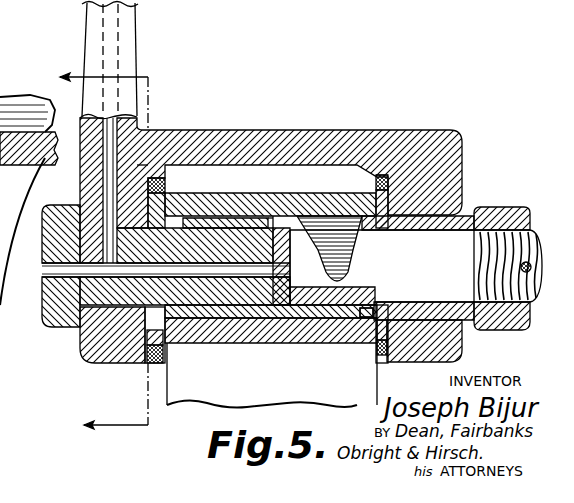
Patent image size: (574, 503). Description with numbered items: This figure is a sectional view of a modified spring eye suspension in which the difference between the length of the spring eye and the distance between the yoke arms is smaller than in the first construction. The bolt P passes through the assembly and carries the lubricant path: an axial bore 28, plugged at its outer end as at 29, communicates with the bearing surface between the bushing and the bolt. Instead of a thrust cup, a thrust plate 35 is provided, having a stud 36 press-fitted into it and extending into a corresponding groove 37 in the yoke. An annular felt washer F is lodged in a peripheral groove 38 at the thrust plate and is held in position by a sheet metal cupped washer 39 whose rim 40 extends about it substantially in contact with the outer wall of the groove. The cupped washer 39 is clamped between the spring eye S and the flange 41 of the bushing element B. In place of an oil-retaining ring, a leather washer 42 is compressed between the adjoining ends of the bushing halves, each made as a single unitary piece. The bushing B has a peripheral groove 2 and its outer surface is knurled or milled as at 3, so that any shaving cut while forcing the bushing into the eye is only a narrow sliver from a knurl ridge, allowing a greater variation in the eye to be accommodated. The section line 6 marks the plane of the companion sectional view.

The peripheral groove 2 is at (372, 316).
The knurled outer surface 3 is at (338, 238).
The section line 6 is at (114, 249).
The axial bore 28 is at (195, 280).
The plug 29 is at (57, 264).
The thrust plate 35 is at (143, 327).
The stud 36 is at (132, 348).
The groove 37 is at (140, 364).
The groove 38 is at (150, 196).
The cupped washer 39 is at (160, 207).
The rim 40 is at (155, 178).
The flange 41 is at (166, 217).
The leather washer 42 is at (274, 304).
The bushing element B is at (222, 308).
The annular felt washer F is at (160, 172).
The bolt P is at (416, 268).
The spring eye S is at (303, 197).